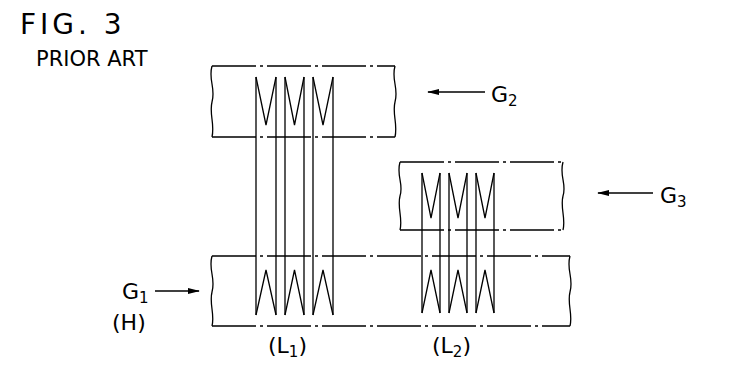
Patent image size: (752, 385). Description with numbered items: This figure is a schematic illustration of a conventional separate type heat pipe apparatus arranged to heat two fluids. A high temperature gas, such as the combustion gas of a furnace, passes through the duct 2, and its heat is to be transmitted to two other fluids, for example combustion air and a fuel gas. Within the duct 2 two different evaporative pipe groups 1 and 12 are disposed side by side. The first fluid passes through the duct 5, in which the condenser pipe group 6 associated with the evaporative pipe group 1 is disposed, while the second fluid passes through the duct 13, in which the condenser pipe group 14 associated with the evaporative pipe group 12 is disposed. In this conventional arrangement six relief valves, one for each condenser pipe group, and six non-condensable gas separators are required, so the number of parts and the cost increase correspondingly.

The evaporative pipe group 1 is at (254, 284).
The duct 2 is at (246, 329).
The duct 5 is at (247, 66).
The condenser pipe group 6 is at (242, 111).
The evaporative pipe group 12 is at (497, 283).
The duct 13 is at (524, 162).
The condenser pipe group 14 is at (420, 207).